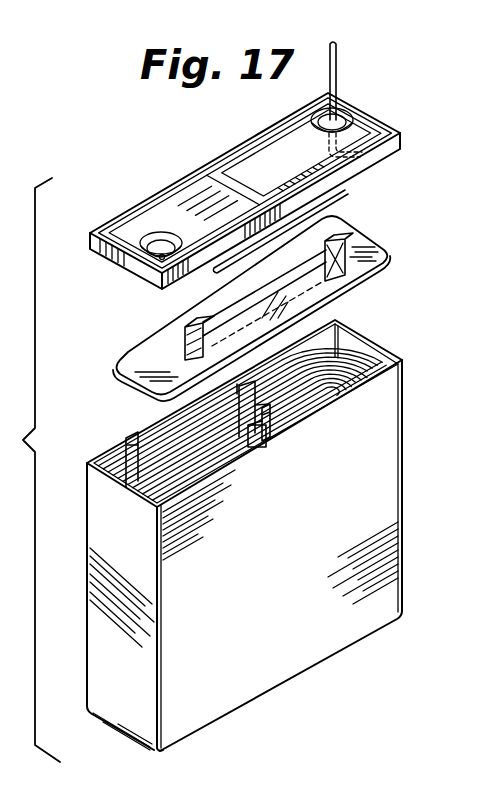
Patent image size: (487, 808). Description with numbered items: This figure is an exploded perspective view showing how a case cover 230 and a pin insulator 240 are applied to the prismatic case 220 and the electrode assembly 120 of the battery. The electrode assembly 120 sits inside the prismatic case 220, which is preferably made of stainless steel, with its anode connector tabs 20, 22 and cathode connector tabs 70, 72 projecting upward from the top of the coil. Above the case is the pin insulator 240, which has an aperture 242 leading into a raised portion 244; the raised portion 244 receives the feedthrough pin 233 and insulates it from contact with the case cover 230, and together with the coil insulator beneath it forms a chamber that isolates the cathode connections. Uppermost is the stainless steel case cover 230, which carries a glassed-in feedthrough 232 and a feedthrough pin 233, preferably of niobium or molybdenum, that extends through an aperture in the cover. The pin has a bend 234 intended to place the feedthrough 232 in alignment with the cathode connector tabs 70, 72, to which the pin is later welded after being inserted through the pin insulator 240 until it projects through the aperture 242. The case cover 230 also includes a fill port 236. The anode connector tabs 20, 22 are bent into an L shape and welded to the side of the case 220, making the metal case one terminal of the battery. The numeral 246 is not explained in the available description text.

The anode connector tab 20 is at (238, 399).
The anode connector tab 22 is at (122, 444).
The cathode connector tab 70 is at (270, 413).
The cathode connector tab 72 is at (262, 450).
The electrode assembly 120 is at (338, 373).
The prismatic case 220 is at (405, 382).
The case cover 230 is at (398, 106).
The feedthrough 232 is at (343, 104).
The feedthrough pin 233 is at (335, 62).
The bend 234 is at (364, 160).
The fill port 236 is at (152, 236).
The pin insulator 240 is at (405, 247).
The aperture 242 is at (352, 246).
The raised portion 244 is at (380, 281).
The container side wall 246 is at (471, 551).